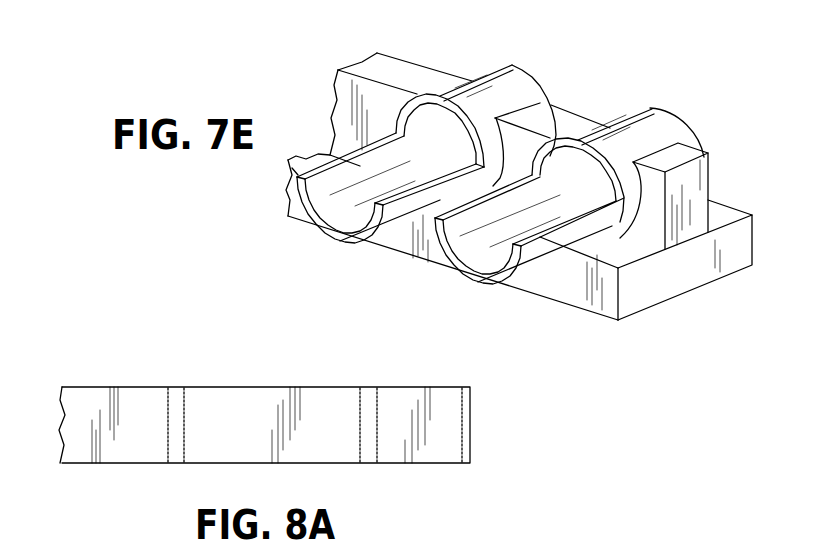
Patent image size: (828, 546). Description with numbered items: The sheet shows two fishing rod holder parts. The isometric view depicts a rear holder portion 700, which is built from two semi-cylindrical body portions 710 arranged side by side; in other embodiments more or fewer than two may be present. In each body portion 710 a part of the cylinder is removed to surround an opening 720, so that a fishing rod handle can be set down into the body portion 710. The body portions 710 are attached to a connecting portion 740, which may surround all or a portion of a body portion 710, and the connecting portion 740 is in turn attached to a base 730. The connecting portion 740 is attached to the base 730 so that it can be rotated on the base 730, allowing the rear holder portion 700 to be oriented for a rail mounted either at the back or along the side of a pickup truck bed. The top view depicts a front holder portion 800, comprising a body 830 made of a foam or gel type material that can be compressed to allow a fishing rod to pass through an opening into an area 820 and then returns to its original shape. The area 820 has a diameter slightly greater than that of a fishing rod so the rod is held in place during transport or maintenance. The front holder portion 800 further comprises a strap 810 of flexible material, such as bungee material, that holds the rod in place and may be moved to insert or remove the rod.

In FIG. 7E, the rear holder portion 700 is at (303, 95).
In FIG. 7E, the body portion 710 is at (520, 82).
In FIG. 7E, the opening 720 is at (447, 158).
In FIG. 7E, the base 730 is at (572, 284).
In FIG. 7E, the connecting portion 740 is at (670, 158).
In FIG. 8A, the front holder portion 800 is at (81, 375).
In FIG. 8A, the strap 810 is at (226, 410).
In FIG. 8A, the area 820 is at (175, 442).
In FIG. 8A, the body 830 is at (397, 463).